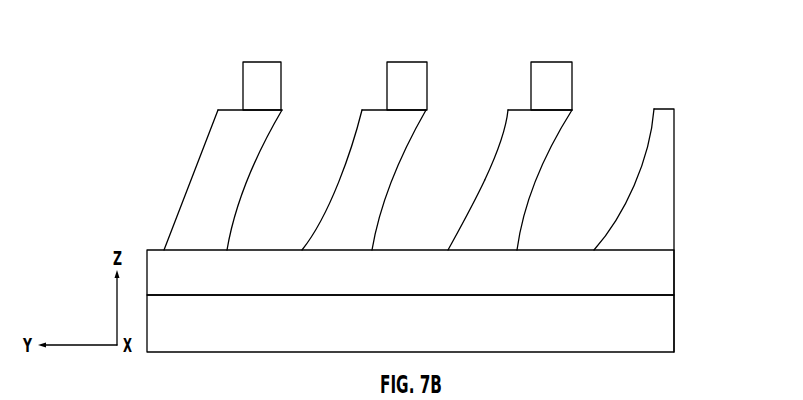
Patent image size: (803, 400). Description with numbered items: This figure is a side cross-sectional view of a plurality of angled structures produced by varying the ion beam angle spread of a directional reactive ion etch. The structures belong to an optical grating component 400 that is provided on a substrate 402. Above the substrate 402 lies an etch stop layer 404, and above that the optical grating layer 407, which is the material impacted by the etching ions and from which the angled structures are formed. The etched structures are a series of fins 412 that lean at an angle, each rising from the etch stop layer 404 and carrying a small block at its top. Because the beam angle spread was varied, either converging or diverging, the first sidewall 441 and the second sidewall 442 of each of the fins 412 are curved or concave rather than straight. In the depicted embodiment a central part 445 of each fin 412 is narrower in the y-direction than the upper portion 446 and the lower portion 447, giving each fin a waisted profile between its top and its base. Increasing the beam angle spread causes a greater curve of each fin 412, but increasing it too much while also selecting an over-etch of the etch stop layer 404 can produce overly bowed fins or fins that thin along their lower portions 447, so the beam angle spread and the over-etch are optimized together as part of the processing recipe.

The optical grating component 400 is at (170, 50).
The substrate 402 is at (660, 322).
The etch stop layer 404 is at (660, 283).
The optical grating layer 407 is at (660, 176).
The fin 412 is at (493, 190).
The first sidewall 441 is at (355, 135).
The second sidewall 442 is at (422, 130).
The central part 445 is at (488, 167).
The upper portion 446 is at (500, 110).
The lower portion 447 is at (446, 234).